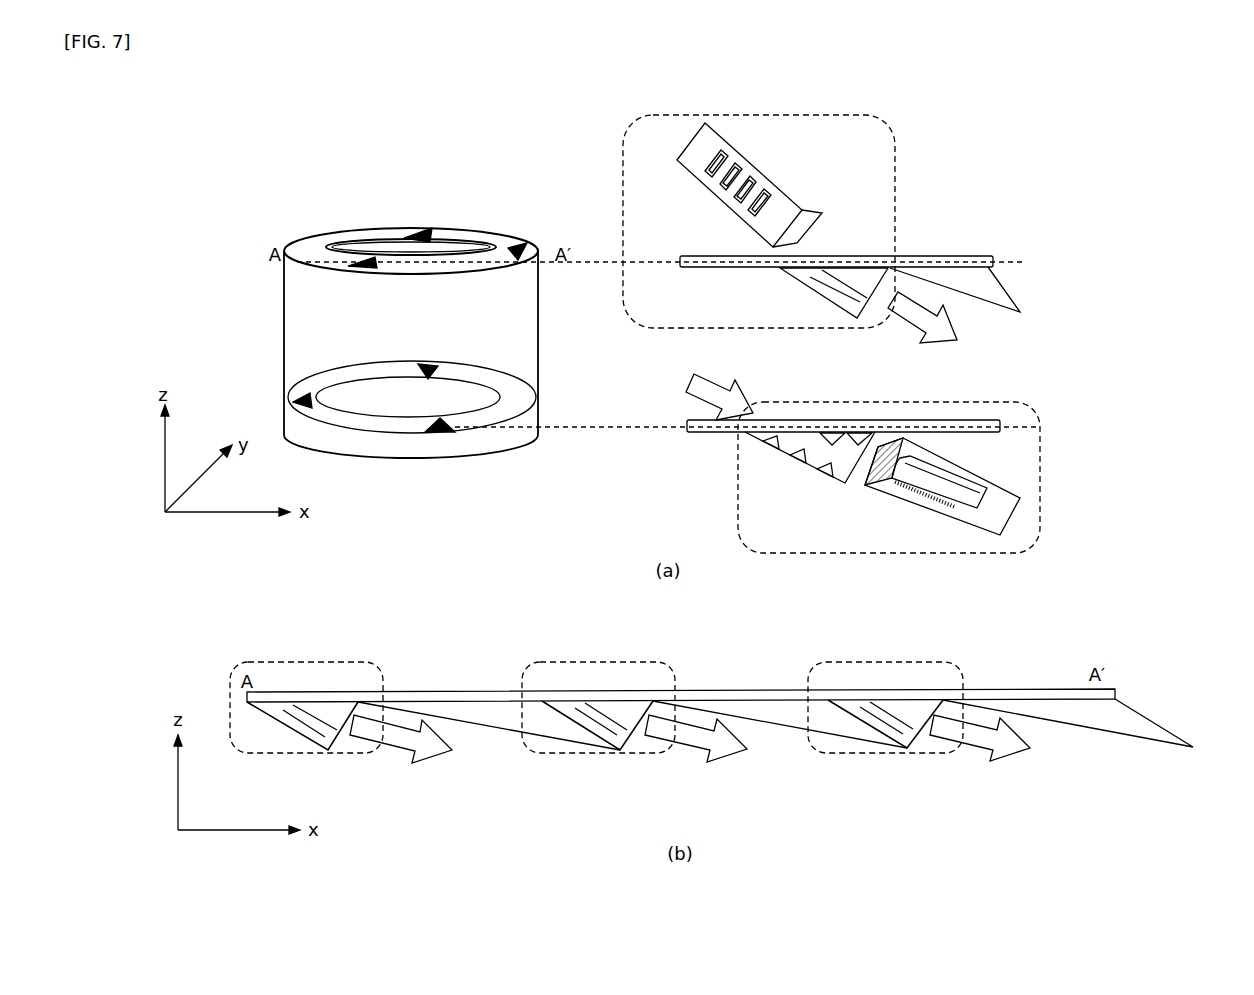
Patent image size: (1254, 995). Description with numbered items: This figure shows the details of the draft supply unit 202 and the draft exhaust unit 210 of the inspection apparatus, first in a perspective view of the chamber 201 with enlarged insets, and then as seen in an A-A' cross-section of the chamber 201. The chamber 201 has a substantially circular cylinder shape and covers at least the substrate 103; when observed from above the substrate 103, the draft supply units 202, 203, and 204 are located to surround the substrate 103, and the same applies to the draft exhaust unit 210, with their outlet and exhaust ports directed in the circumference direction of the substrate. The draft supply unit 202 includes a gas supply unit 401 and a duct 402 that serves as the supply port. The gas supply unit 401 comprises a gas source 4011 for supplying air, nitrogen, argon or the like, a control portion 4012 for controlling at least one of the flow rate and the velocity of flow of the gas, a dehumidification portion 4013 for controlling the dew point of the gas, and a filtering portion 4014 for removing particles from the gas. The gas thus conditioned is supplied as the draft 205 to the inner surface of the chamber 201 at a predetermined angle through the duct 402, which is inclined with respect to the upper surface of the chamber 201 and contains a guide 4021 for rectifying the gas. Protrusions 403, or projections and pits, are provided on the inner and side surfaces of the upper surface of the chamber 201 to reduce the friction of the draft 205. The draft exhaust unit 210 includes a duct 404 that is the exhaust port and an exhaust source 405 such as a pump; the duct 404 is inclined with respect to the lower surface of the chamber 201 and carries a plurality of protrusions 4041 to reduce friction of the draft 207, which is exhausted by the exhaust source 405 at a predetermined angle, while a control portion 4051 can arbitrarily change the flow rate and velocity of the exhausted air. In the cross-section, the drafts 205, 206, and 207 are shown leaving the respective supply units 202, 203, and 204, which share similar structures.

The substrate 103 is at (328, 388).
The chamber 201 is at (513, 306).
The draft supply unit 202 is at (408, 232).
The draft supply unit 203 is at (522, 240).
The draft supply unit 204 is at (350, 258).
The draft 205 is at (912, 336).
The light emission direction 206 is at (1000, 741).
The draft 207 is at (720, 411).
The draft exhaust unit 210 is at (430, 364).
The gas supply unit 401 is at (682, 172).
The gas source 4011 is at (724, 146).
The control portion 4012 is at (740, 176).
The dehumidification portion 4013 is at (755, 190).
The filtering portion 4014 is at (798, 192).
The duct 402 is at (846, 316).
The guide 4021 is at (830, 300).
The protrusions 403 is at (988, 290).
The duct 404 is at (838, 478).
The protrusions 4041 is at (762, 452).
The exhaust source 405 is at (952, 510).
The control portion 4051 is at (940, 468).